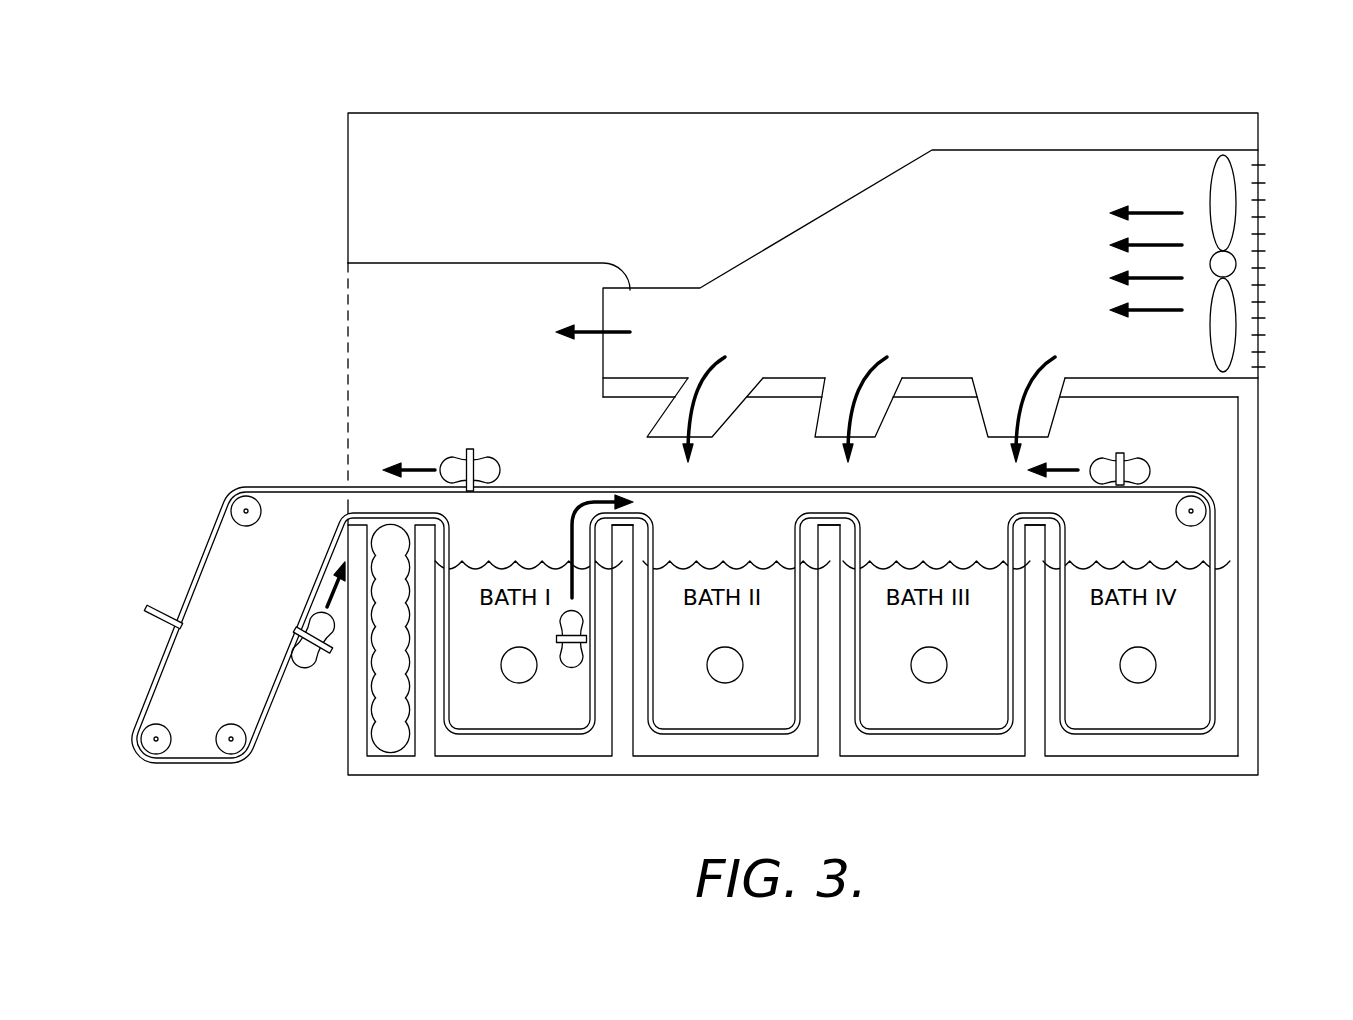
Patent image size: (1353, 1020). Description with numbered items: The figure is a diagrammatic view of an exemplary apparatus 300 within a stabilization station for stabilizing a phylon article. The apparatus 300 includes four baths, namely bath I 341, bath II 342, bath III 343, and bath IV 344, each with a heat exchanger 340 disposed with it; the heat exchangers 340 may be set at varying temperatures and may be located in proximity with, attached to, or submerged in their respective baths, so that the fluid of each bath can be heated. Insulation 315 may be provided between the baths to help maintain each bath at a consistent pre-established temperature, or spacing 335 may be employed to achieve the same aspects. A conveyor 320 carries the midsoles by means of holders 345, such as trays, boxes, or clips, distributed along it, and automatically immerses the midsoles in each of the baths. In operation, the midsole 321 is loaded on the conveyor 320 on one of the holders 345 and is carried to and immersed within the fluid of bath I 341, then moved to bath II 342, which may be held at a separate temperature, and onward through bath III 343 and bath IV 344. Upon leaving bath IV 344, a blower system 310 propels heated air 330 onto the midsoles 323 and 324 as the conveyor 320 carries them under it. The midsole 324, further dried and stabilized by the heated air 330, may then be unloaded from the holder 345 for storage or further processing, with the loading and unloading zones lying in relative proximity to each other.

The apparatus 300 is at (1285, 84).
The blower system 310 is at (1026, 314).
The insulation 315 is at (391, 753).
The conveyor 320 is at (220, 517).
The midsole 321 is at (305, 668).
The midsole 323 is at (1133, 457).
The midsole 324 is at (470, 449).
The heated air 330 is at (733, 362).
The spacing 335 is at (626, 736).
The heat exchanger 340 is at (532, 680).
The bath I 341 is at (480, 737).
The bath II 342 is at (712, 738).
The bath III 343 is at (903, 738).
The bath IV 344 is at (1178, 738).
The holder 345 is at (163, 608).